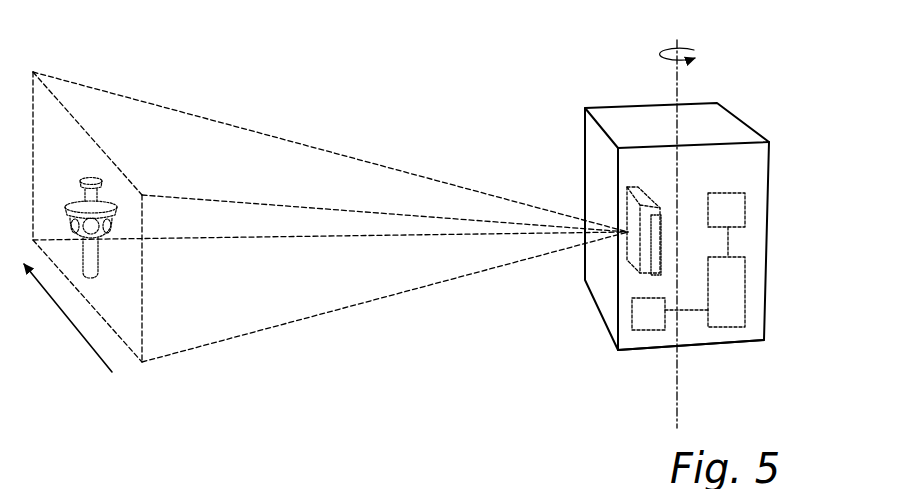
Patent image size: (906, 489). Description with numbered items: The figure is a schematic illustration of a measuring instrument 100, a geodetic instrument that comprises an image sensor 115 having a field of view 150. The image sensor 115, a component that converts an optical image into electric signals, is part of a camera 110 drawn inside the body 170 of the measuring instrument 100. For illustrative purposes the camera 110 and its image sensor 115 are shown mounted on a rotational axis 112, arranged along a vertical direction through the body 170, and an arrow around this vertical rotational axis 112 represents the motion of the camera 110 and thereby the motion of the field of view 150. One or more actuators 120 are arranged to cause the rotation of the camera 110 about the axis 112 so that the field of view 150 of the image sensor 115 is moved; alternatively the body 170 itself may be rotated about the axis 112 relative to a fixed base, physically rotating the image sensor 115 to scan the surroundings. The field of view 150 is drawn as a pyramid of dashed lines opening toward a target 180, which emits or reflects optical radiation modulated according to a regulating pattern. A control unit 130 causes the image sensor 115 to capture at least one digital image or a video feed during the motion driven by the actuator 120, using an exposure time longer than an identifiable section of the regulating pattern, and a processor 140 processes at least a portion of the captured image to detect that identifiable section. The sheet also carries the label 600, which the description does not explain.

The measuring instrument 100 is at (629, 76).
The camera 110 is at (646, 201).
The rotational axis 112 is at (677, 78).
The image sensor 115 is at (653, 238).
The actuator 120 is at (637, 317).
The control unit 130 is at (728, 315).
The processor 140 is at (728, 197).
The field of view 150 is at (305, 160).
The body 170 is at (655, 352).
The target 180 is at (110, 201).
The system 600 is at (541, 477).